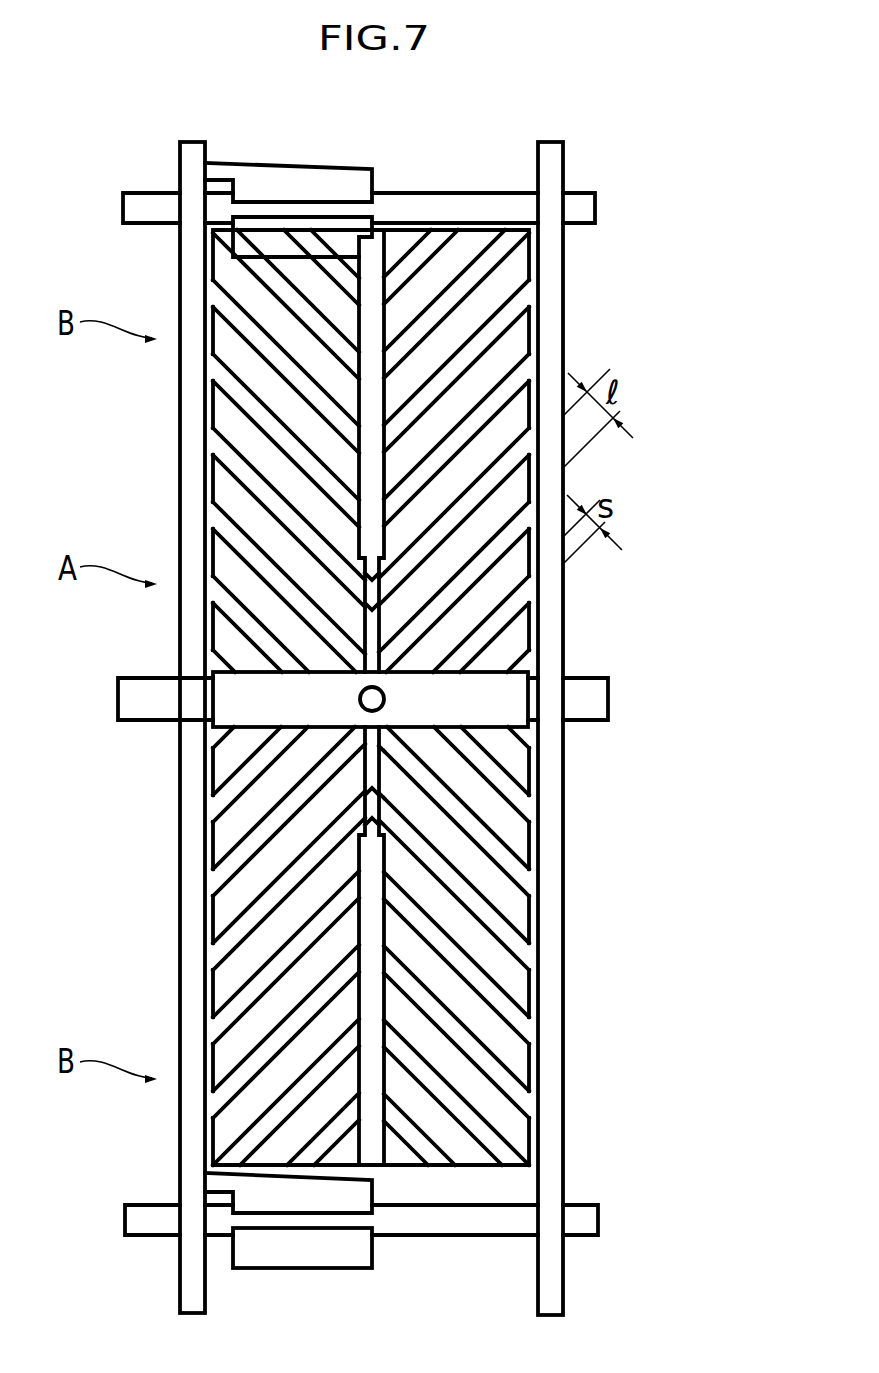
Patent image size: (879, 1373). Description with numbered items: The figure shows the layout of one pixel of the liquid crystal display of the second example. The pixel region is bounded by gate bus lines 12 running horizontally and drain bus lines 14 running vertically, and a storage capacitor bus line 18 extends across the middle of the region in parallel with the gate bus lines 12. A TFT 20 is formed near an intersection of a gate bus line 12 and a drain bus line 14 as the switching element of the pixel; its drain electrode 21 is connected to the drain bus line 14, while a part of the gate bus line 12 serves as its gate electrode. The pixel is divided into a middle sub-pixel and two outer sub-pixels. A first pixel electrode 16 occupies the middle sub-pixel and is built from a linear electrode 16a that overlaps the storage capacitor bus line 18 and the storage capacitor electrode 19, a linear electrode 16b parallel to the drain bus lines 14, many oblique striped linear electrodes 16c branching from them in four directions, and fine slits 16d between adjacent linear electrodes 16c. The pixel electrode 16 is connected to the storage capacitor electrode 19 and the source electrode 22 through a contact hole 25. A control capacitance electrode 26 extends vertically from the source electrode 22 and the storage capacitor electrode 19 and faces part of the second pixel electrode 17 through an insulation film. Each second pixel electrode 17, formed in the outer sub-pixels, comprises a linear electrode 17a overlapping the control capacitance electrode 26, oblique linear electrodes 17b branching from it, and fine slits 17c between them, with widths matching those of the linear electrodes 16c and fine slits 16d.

The gate bus line 12 is at (125, 207).
The drain bus line 14 is at (192, 142).
The first pixel electrode 16 is at (558, 910).
The linear electrode 16a is at (510, 728).
The linear electrode 16b is at (385, 655).
The linear electrode 16c is at (682, 718).
The fine slit 16d is at (517, 802).
The second pixel electrode 17 is at (468, 697).
The linear electrode 17a is at (387, 355).
The linear electrode 17b is at (513, 343).
The fine slit 17c is at (523, 370).
The storage capacitor bus line 18 is at (120, 697).
The storage capacitor electrode 19 is at (267, 728).
The TFT 20 is at (326, 687).
The drain electrode 21 is at (292, 178).
The source electrode 22 is at (302, 232).
The contact hole 25 is at (360, 700).
The control capacitance electrode 26 is at (358, 462).